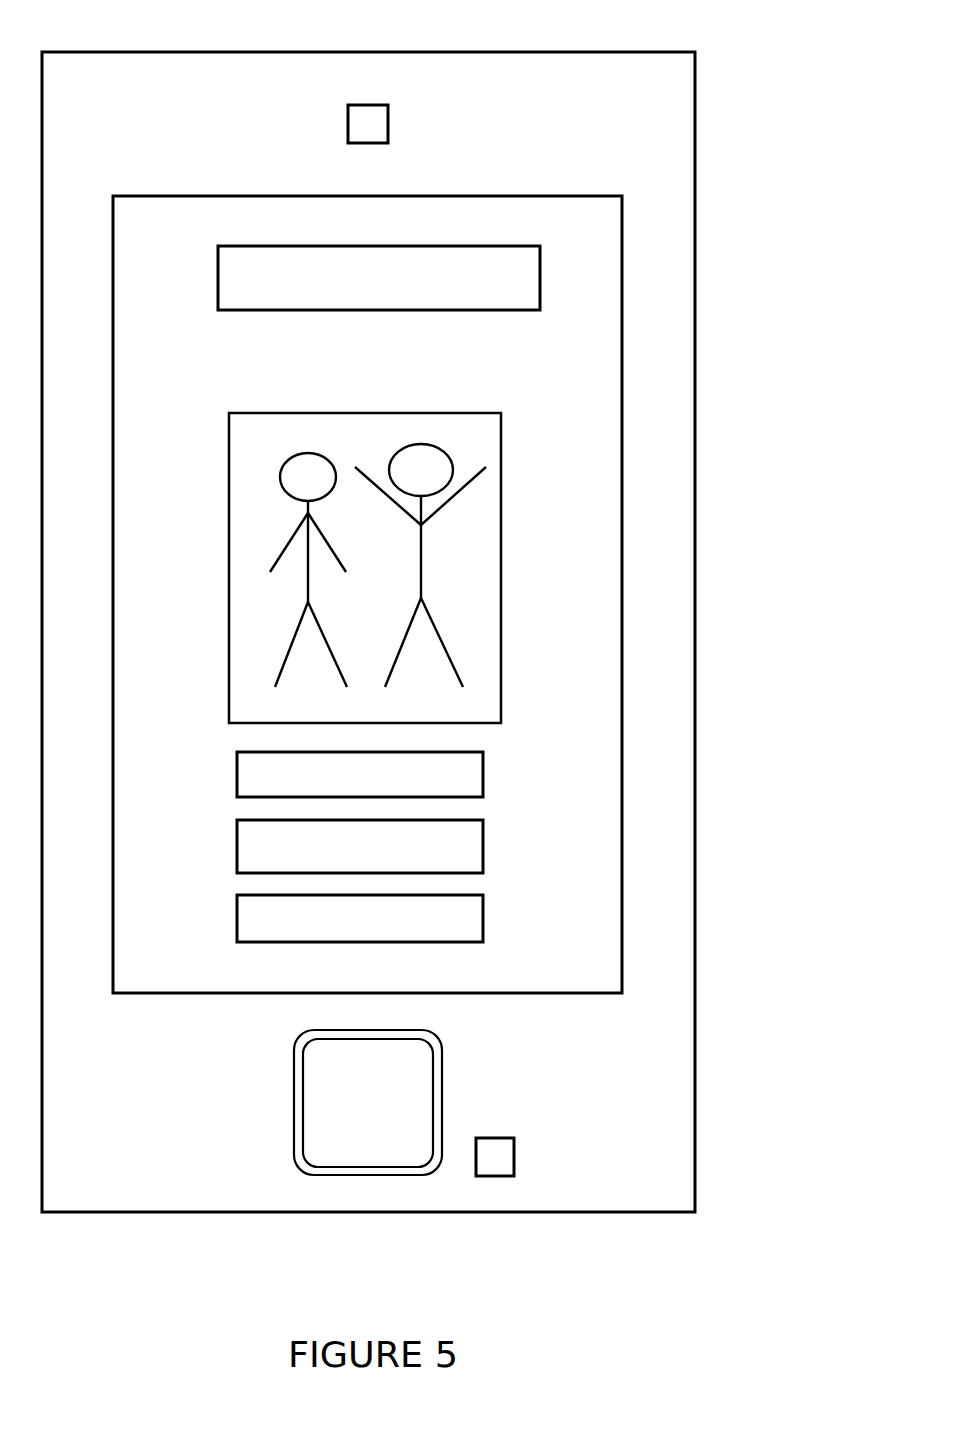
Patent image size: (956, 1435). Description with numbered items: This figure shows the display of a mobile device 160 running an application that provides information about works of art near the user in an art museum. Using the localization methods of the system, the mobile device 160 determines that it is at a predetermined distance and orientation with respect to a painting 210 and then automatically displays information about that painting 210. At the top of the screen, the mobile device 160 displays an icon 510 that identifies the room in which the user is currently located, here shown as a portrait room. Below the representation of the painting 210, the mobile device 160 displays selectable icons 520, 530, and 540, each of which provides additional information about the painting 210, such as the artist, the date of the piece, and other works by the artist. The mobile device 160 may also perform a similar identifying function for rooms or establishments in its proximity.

The mobile device 160 is at (695, 214).
The icon 510 is at (540, 289).
The painting 210 is at (502, 513).
The selectable icon 520 is at (484, 777).
The selectable icon 530 is at (484, 847).
The selectable icon 540 is at (484, 910).